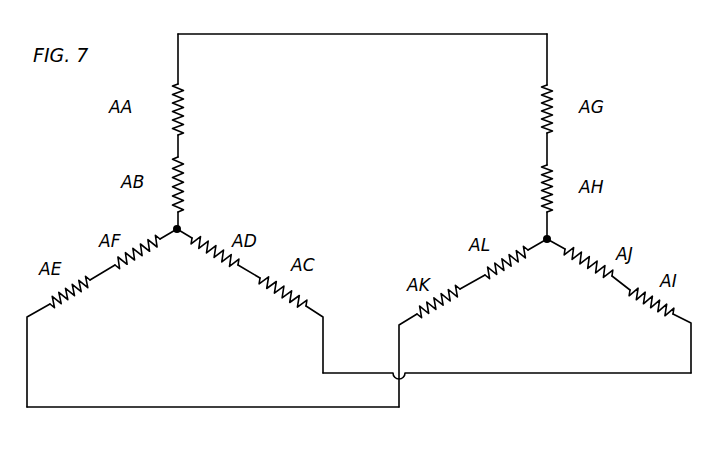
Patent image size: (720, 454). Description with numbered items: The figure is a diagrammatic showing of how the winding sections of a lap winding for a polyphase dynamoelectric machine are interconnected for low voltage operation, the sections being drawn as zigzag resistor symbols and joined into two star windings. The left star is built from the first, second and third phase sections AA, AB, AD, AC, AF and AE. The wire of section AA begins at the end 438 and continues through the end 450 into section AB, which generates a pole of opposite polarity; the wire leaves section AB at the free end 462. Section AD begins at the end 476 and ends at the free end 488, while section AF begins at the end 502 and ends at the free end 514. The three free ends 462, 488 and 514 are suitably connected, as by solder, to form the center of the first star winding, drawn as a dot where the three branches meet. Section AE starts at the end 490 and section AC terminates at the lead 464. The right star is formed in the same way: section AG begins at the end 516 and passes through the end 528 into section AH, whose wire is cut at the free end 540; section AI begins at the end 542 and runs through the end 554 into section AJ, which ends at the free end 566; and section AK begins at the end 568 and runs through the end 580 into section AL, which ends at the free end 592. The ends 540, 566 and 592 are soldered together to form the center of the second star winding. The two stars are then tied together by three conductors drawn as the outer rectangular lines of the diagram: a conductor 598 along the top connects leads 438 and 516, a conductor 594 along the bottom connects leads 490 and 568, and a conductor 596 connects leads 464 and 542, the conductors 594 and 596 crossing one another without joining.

The end of wire 438 is at (178, 67).
The end of wire 450 is at (178, 148).
The free end of wire 462 is at (178, 216).
The free end of wire 514 is at (173, 227).
The free end of wire 488 is at (190, 241).
The end of wire 476 is at (252, 276).
The lead 464 is at (315, 318).
The end of wire 502 is at (106, 270).
The end of wire 490 is at (40, 312).
The conductor 594 is at (205, 407).
The conductor 598 is at (335, 36).
The conductor 596 is at (548, 373).
The end of wire 516 is at (547, 62).
The end of wire 528 is at (547, 148).
The free end of wire 540 is at (547, 219).
The free end of wire 566 is at (552, 237).
The free end of wire 592 is at (539, 247).
The end of wire 580 is at (477, 285).
The end of wire 568 is at (410, 318).
The end of wire 554 is at (617, 283).
The end of wire 542 is at (680, 323).